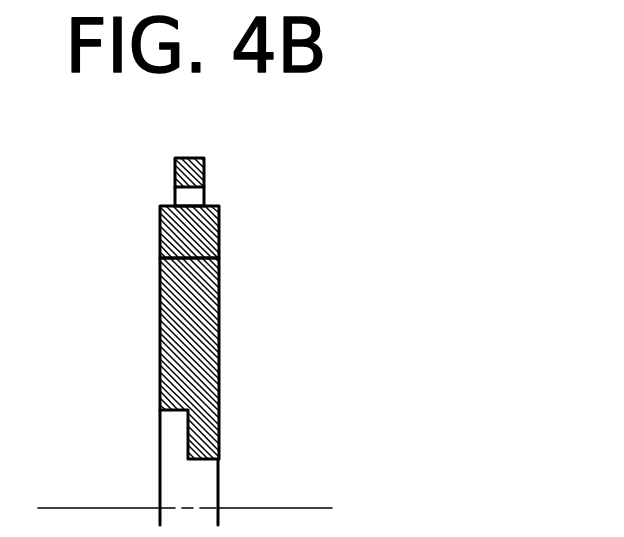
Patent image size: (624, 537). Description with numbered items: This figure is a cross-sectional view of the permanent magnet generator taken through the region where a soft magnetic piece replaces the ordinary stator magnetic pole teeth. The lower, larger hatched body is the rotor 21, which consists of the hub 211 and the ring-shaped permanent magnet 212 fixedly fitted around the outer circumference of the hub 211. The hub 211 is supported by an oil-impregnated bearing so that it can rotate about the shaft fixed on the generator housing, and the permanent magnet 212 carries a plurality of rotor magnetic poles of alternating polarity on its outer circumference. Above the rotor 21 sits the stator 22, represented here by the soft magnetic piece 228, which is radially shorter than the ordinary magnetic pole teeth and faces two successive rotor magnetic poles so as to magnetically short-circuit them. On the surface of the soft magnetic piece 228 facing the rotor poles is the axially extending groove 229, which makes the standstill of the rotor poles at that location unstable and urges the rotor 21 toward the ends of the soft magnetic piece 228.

The stator 22 is at (367, 185).
The soft magnetic piece 228 is at (205, 177).
The groove 229 is at (191, 200).
The rotor 21 is at (296, 332).
The permanent magnet 212 is at (220, 243).
The hub 211 is at (220, 380).